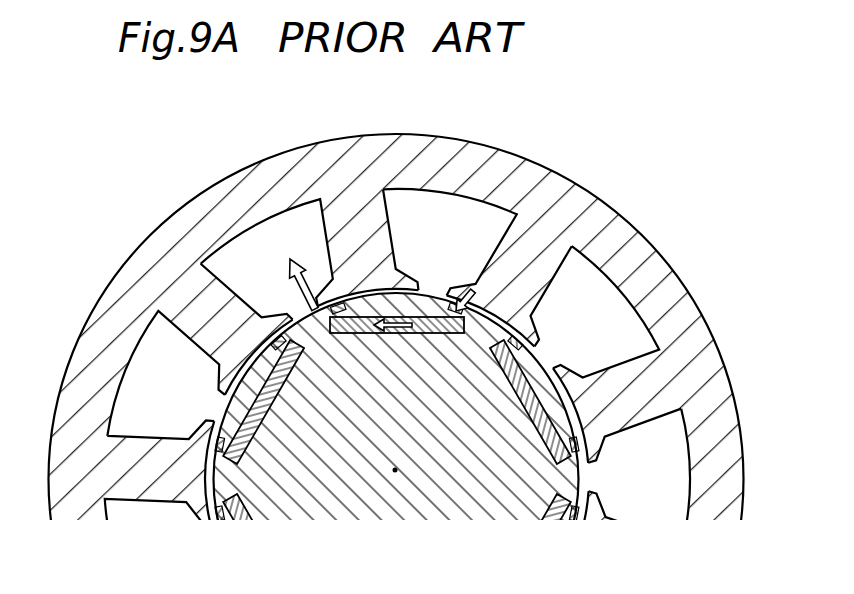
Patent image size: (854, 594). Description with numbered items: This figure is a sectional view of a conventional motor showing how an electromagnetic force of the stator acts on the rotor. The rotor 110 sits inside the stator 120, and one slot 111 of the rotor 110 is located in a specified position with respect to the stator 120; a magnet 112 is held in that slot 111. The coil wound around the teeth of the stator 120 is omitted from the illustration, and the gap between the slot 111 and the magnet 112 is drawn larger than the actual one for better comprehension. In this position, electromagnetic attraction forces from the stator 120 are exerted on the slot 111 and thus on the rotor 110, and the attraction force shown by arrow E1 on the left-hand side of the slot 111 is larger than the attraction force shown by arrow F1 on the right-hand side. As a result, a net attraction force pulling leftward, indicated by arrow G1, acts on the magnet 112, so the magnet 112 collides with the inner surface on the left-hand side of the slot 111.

The rotor 110 is at (380, 443).
The slot 111 is at (428, 292).
The magnet 112 is at (237, 403).
The stator 120 is at (396, 331).
The attraction force arrow E1 is at (310, 300).
The attraction force arrow F1 is at (467, 286).
The leftward attraction force arrow G1 is at (393, 332).